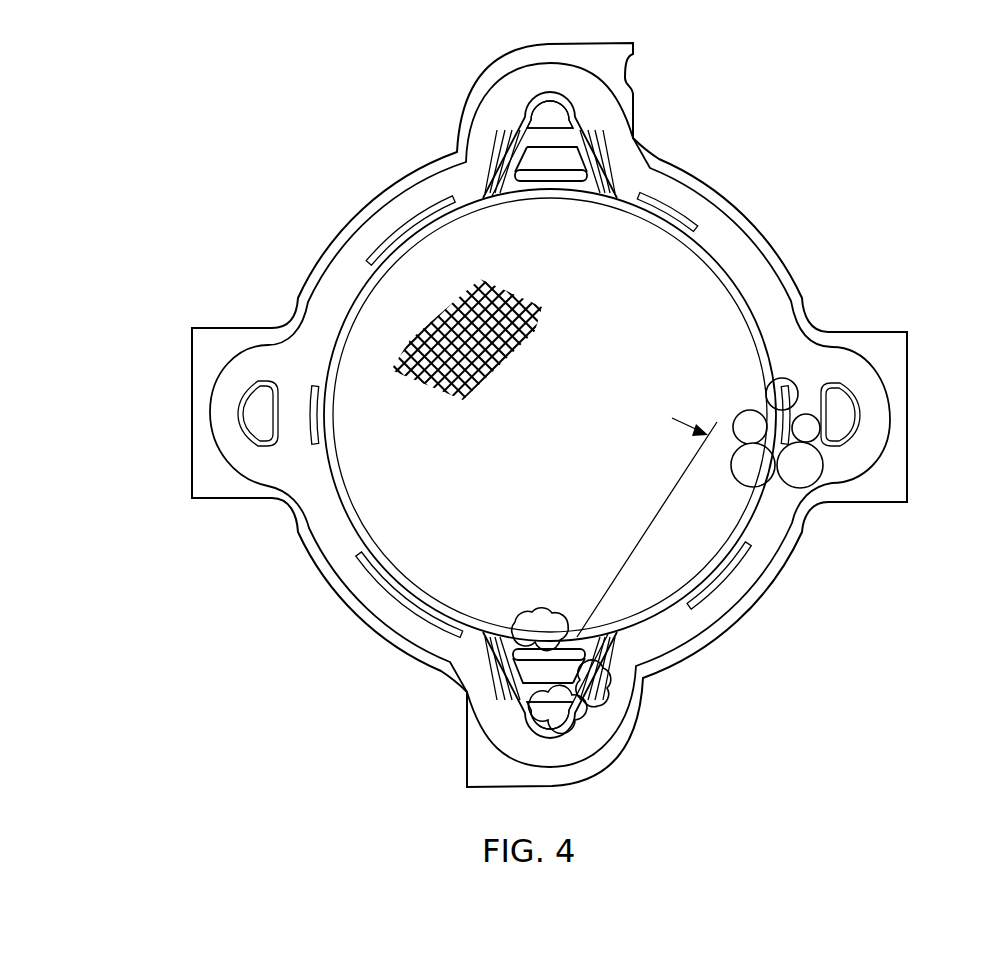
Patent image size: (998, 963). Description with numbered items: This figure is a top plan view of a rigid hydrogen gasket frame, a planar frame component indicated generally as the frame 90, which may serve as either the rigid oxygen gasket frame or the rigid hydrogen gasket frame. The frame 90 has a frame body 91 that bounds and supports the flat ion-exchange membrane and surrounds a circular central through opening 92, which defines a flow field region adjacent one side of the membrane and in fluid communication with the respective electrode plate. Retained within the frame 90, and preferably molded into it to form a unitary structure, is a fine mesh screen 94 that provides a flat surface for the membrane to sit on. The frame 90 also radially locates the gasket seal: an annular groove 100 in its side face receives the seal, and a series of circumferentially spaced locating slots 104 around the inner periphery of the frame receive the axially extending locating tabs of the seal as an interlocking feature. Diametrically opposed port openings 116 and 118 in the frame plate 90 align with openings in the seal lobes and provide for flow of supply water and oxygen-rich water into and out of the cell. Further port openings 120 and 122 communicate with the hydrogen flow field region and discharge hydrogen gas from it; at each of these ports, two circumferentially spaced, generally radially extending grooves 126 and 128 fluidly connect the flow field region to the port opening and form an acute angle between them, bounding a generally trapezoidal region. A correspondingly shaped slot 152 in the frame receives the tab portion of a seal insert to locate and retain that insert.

The rigid gasket frame 90 is at (772, 625).
The frame body 91 is at (798, 290).
The central through opening 92 is at (448, 577).
The screen 94 is at (432, 332).
The annular groove 100 is at (767, 550).
The locating slots 104 is at (670, 204).
The port opening 116 is at (255, 412).
The port opening 118 is at (840, 420).
The port opening 120 is at (537, 717).
The port opening 122 is at (560, 116).
The radially extending groove 126 is at (593, 140).
The radially extending groove 128 is at (505, 140).
The slot 152 is at (563, 160).